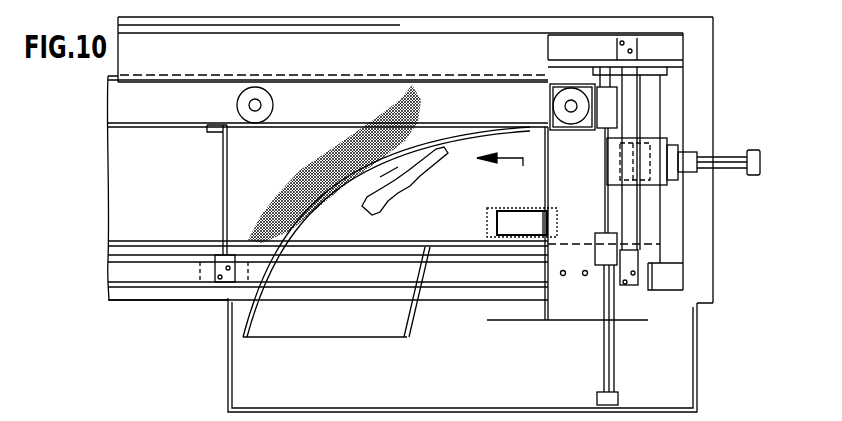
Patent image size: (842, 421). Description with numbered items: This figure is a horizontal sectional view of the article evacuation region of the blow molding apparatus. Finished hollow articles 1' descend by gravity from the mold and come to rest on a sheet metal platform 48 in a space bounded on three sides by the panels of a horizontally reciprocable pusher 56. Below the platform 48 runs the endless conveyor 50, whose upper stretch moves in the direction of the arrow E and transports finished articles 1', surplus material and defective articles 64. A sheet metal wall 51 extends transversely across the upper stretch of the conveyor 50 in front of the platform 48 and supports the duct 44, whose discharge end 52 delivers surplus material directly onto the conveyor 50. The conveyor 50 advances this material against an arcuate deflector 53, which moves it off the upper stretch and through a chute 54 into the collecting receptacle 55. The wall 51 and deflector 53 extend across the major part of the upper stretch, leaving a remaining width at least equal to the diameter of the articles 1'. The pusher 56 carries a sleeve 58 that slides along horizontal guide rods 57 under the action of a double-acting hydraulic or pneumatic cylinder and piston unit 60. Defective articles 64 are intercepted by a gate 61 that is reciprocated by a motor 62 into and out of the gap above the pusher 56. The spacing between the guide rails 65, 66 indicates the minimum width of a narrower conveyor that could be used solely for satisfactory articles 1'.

The hollow articles 1' is at (413, 105).
The duct 44 is at (515, 208).
The platform 48 is at (590, 223).
The conveyor 50 is at (442, 230).
The sheet metal wall 51 is at (548, 180).
The discharge end 52 is at (515, 218).
The arcuate deflector 53 is at (297, 230).
The chute 54 is at (366, 332).
The collecting receptacle 55 is at (504, 379).
The pusher 56 is at (584, 133).
The guide rods 57 is at (607, 225).
The sleeve 58 is at (607, 107).
The cylinder and piston unit 60 is at (606, 365).
The gate 61 is at (655, 146).
The motor 62 is at (733, 163).
The defective articles 64 is at (412, 180).
The guide rail 65 is at (198, 120).
The guide rail 66 is at (451, 89).
The arrow E is at (502, 173).